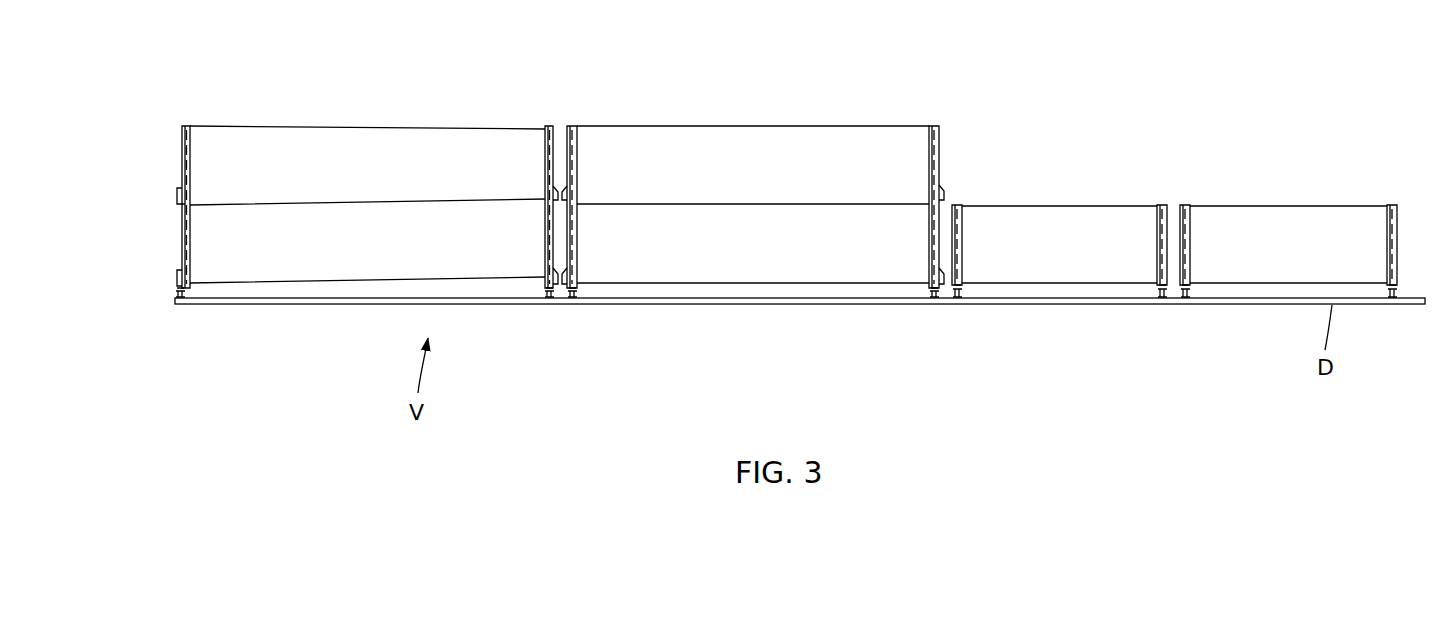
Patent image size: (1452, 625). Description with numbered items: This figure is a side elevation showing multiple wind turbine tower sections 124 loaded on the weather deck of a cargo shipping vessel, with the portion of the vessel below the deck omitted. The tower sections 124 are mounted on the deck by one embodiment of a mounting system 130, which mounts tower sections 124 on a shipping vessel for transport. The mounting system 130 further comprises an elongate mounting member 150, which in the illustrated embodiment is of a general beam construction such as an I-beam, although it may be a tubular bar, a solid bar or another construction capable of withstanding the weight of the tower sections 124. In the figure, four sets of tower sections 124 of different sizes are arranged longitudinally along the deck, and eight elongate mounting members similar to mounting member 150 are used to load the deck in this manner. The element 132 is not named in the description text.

The tower section 124 is at (402, 148).
The mounting system 130 is at (168, 301).
The post 132 is at (560, 240).
The elongate mounting member 150 is at (184, 293).